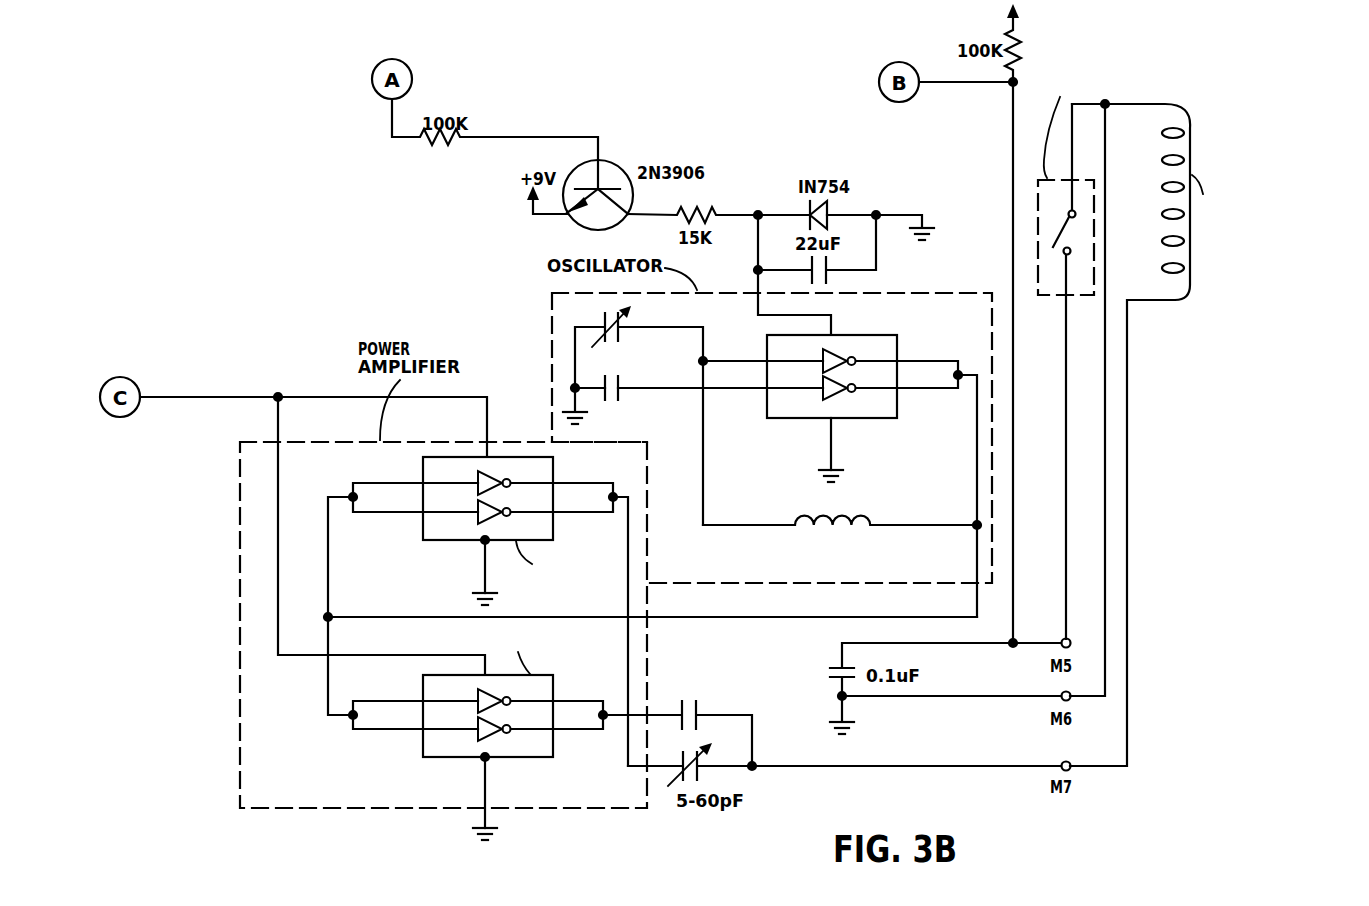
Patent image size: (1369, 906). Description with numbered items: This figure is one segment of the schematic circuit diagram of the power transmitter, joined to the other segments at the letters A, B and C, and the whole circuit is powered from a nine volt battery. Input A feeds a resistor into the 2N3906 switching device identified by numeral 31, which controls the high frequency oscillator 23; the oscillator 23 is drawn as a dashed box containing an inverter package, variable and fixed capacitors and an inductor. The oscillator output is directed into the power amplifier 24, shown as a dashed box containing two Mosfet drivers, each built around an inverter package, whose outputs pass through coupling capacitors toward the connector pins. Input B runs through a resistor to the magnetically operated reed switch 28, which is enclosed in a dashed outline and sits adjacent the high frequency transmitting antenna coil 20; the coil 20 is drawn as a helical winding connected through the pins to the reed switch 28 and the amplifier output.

The switching diode 2N3906 31 is at (602, 160).
The high frequency oscillator 23 is at (938, 290).
The power amplifier 24 is at (343, 440).
The magnetically operated reed switch 28 is at (1044, 297).
The high frequency transmitting antenna coil 20 is at (1180, 302).